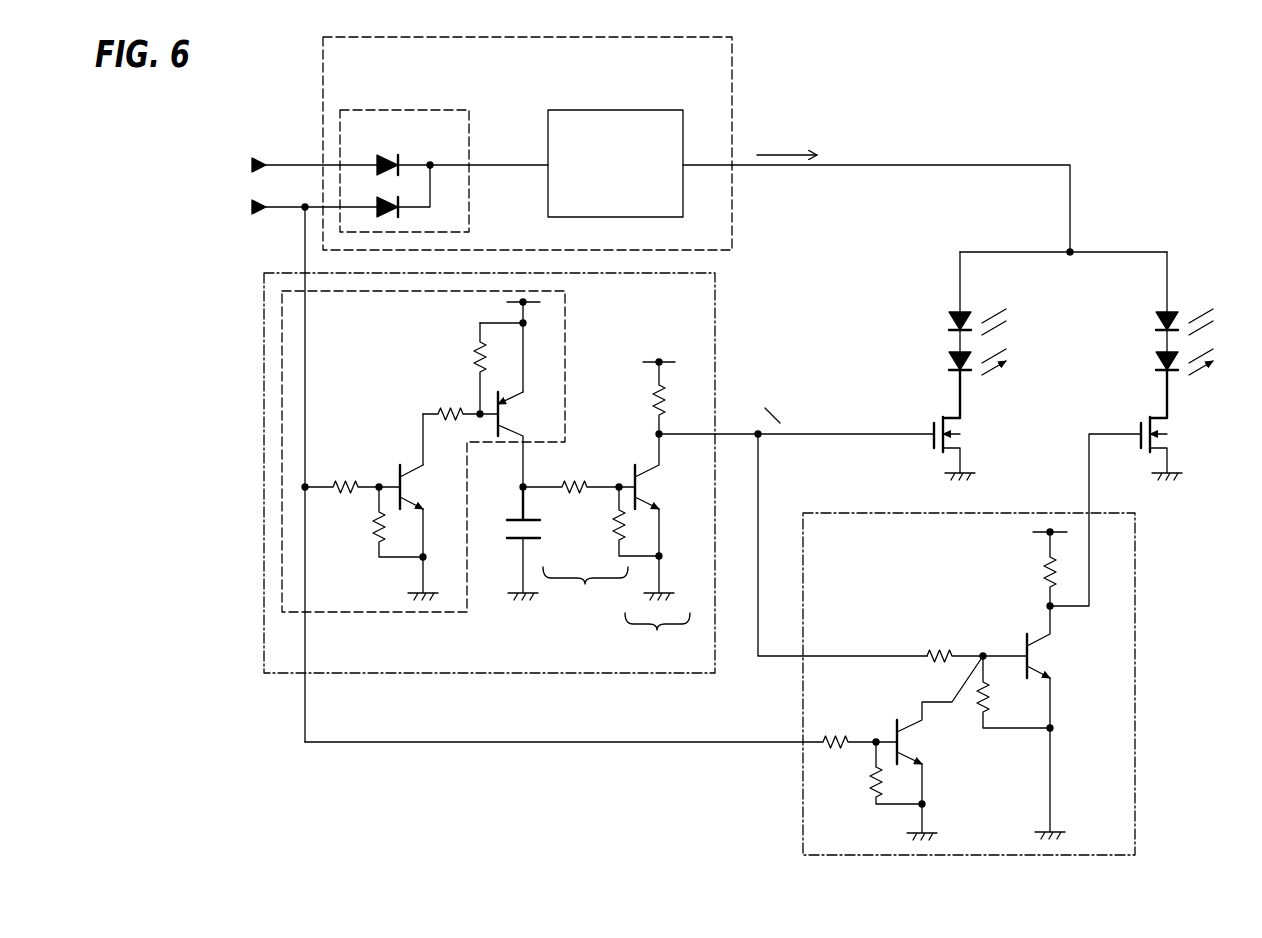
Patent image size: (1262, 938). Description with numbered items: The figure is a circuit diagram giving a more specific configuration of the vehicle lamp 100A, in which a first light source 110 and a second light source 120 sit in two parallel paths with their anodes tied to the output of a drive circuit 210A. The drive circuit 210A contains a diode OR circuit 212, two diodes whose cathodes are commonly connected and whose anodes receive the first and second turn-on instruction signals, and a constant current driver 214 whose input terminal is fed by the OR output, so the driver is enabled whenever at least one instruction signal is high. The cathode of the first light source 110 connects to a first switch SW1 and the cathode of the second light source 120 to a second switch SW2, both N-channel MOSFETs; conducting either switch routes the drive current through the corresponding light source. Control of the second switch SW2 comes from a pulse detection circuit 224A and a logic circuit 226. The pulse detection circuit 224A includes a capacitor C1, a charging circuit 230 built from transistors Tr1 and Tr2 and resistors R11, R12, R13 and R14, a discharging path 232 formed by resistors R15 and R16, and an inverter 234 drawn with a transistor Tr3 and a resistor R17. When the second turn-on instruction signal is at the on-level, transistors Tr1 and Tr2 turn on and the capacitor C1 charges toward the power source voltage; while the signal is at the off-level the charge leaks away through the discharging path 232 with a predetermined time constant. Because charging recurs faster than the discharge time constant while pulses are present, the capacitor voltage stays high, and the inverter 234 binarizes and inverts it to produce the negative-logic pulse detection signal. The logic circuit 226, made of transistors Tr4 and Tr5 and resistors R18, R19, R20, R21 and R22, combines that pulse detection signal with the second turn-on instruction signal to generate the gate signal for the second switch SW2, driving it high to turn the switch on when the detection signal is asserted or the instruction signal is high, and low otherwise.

The vehicle lamp 100A is at (1167, 110).
The first light source 110 is at (980, 305).
The second light source 120 is at (1187, 305).
The drive circuit 210A is at (732, 73).
The diode OR circuit 212 is at (435, 110).
The constant current driver 214 is at (645, 110).
The pulse detection circuit 224A is at (418, 673).
The logic circuit 226 is at (1135, 672).
The charging circuit 230 is at (378, 612).
The discharging path 232 is at (585, 590).
The inverter 234 is at (657, 637).
The first switch SW1 is at (1002, 417).
The second switch SW2 is at (1182, 433).
The resistor R11 is at (342, 473).
The resistor R12 is at (378, 522).
The resistor R13 is at (451, 402).
The resistor R14 is at (458, 368).
The resistor R15 is at (571, 474).
The resistor R16 is at (613, 521).
The resistor R17 is at (641, 396).
The resistor R18 is at (951, 643).
The resistor R19 is at (1013, 692).
The resistor R20 is at (590, 730).
The resistor R21 is at (875, 773).
The resistor R22 is at (1031, 567).
The capacitor C1 is at (509, 543).
The transistor Tr1 is at (411, 511).
The transistor Tr2 is at (515, 439).
The transistor Tr3 is at (652, 495).
The transistor Tr4 is at (1031, 667).
The transistor Tr5 is at (929, 730).